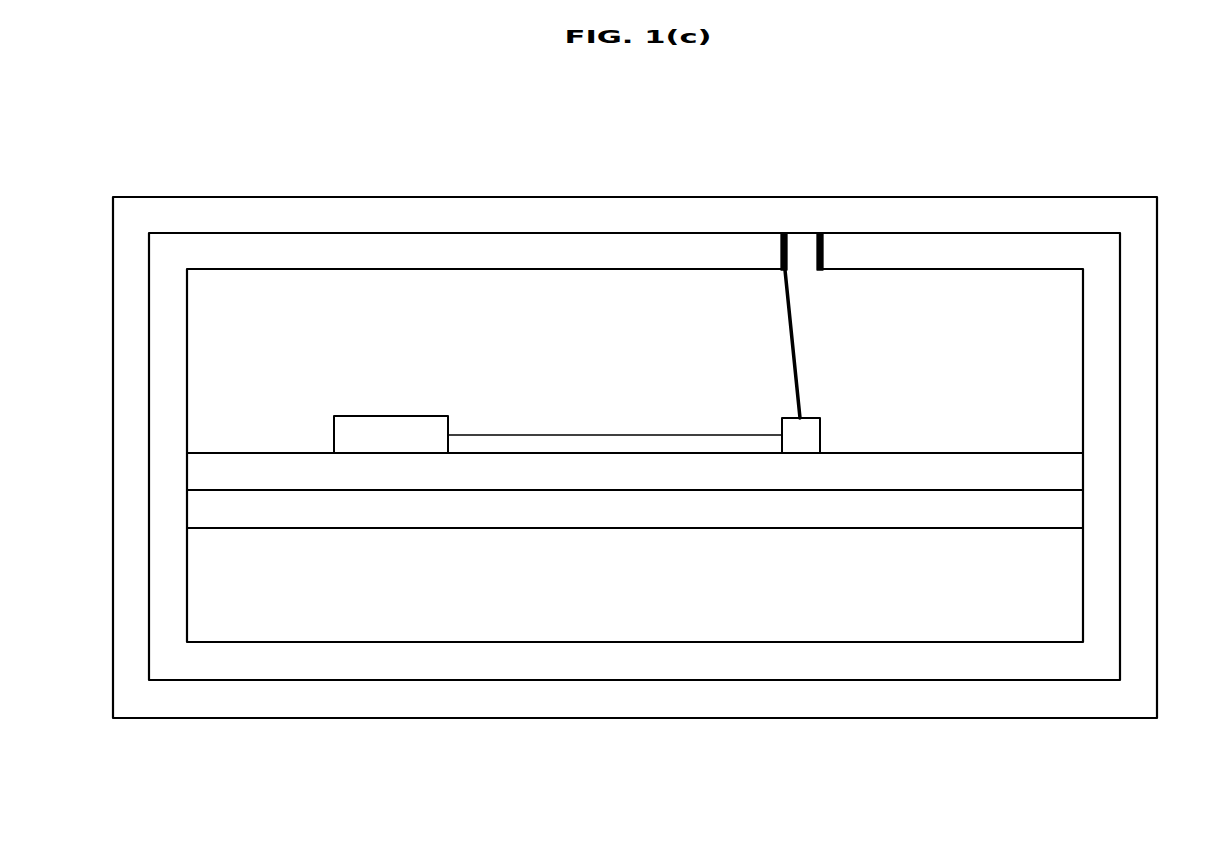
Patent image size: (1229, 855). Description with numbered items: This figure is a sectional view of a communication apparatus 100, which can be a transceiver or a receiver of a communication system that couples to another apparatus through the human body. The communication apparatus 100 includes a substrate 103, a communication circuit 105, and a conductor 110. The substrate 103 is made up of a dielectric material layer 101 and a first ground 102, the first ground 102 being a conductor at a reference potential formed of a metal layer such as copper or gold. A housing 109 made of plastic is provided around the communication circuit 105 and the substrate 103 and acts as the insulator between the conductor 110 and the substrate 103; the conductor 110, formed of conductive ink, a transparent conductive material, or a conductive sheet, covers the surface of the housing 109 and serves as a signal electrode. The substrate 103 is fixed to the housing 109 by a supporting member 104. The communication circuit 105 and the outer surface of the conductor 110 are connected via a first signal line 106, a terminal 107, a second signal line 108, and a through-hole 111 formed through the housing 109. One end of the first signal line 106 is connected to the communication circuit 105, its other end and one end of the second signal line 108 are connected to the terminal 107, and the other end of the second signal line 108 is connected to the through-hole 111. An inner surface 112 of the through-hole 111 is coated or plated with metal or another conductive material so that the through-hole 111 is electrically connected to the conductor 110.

The communication apparatus 100 is at (278, 159).
The dielectric material layer 101 is at (654, 470).
The first ground 102 is at (713, 508).
The substrate 103 is at (622, 775).
The supporting member 104 is at (220, 596).
The communication circuit 105 is at (357, 433).
The first signal line 106 is at (537, 446).
The terminal 107 is at (797, 438).
The second signal line 108 is at (797, 370).
The housing 109 is at (1091, 365).
The conductor 110 is at (1027, 198).
The through-hole 111 is at (802, 256).
The inner surface 112 is at (823, 251).